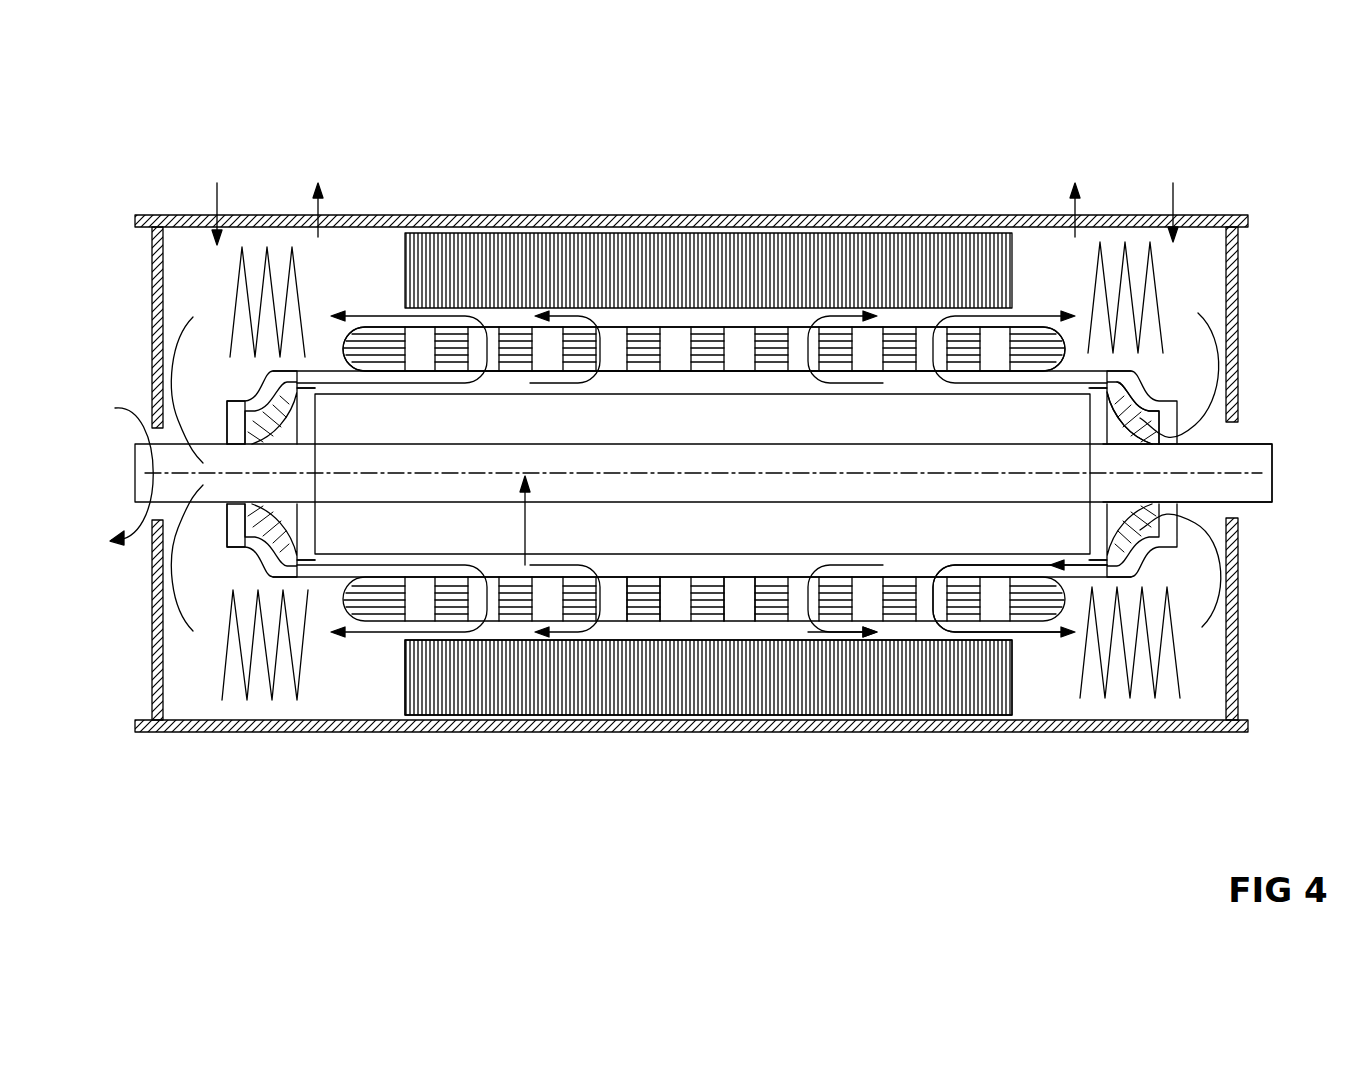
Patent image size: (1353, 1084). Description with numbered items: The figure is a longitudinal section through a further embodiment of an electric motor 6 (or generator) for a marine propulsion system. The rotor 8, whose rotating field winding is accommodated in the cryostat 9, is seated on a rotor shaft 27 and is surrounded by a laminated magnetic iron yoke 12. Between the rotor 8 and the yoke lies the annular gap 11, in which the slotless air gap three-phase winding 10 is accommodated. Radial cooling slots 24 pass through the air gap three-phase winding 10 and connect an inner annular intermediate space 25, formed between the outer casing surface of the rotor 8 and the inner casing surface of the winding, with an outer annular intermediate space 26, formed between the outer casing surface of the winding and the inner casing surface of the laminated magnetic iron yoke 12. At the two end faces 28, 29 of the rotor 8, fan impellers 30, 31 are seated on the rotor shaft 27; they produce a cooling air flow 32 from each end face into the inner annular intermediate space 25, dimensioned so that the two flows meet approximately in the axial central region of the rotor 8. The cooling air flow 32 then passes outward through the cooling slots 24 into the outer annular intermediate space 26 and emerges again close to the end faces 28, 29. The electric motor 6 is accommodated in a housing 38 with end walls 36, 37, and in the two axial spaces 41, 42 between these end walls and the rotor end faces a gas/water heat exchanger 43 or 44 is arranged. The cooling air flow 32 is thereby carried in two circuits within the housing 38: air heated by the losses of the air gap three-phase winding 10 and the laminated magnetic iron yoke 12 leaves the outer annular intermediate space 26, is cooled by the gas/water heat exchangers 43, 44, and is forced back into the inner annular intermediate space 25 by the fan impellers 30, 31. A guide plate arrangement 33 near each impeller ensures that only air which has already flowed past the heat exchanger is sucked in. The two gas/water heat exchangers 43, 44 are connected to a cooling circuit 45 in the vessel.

The electric motor 6 is at (955, 675).
The rotor 8 is at (515, 572).
The cryostat 9 is at (522, 570).
The air gap three-phase winding 10 is at (650, 602).
The annular gap 11 is at (1058, 570).
The laminated magnetic iron yoke 12 is at (568, 675).
The cooling slots 24 is at (742, 602).
The inner annular intermediate space 25 is at (668, 392).
The outer annular intermediate space 26 is at (770, 322).
The rotor shaft 27 is at (150, 397).
The end face 28 is at (1160, 486).
The end face 29 is at (280, 492).
The fan impeller 30 is at (1120, 415).
The fan impeller 31 is at (240, 300).
The cooling air flow 32 is at (826, 634).
The guide plate arrangement 33 is at (240, 388).
The end wall 36 is at (1247, 652).
The end wall 37 is at (150, 272).
The housing 38 is at (983, 733).
The axial space 41 is at (1200, 280).
The axial space 42 is at (192, 673).
The gas/water heat exchanger 43 is at (1135, 245).
The gas/water heat exchanger 44 is at (248, 687).
The cooling circuit 45 is at (325, 190).